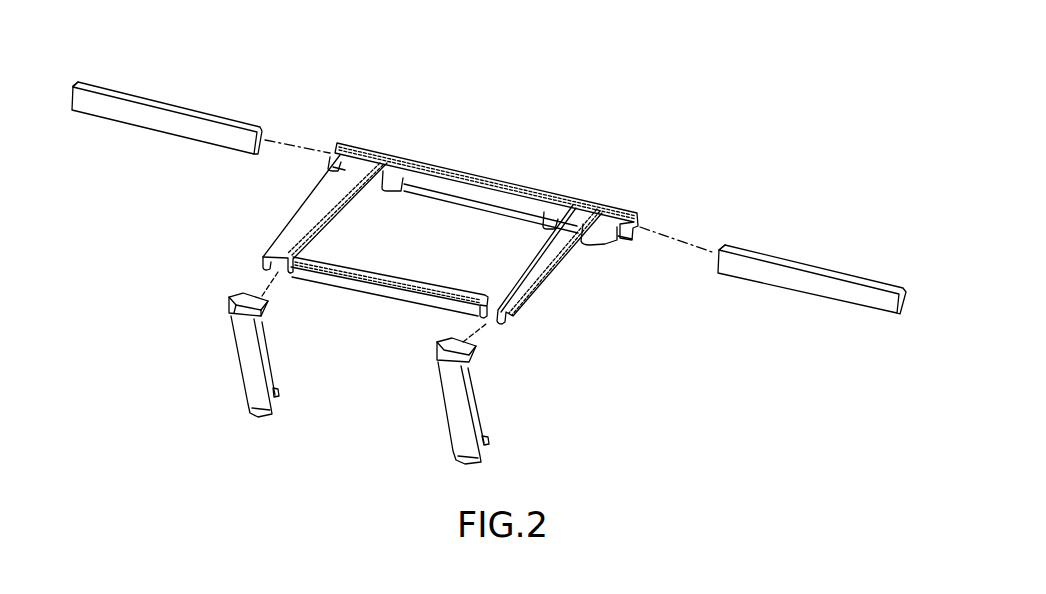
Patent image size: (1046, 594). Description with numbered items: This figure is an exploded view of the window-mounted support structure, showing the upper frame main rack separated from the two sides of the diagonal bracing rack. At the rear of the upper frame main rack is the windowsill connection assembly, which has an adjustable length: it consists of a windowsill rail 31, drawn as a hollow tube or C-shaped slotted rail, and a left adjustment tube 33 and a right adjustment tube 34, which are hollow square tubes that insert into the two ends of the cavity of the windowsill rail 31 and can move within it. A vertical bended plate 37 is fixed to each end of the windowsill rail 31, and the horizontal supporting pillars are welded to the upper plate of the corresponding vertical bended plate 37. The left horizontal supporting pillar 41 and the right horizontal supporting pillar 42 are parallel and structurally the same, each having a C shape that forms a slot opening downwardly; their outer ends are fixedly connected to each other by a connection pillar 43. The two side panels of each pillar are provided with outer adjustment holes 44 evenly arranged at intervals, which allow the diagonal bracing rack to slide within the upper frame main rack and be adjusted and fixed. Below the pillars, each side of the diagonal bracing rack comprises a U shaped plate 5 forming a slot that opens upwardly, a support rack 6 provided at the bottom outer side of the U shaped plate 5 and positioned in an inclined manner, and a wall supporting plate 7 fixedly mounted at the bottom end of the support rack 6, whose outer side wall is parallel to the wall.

The windowsill rail 31 is at (458, 177).
The left adjustment tube 33 is at (174, 108).
The right adjustment tube 34 is at (788, 258).
The vertical bended plate 37 is at (603, 235).
The left horizontal supporting pillar 41 is at (303, 226).
The right horizontal supporting pillar 42 is at (578, 270).
The connection pillar 43 is at (382, 278).
The outer adjustment holes 44 is at (522, 302).
The U shaped plate 5 is at (258, 313).
The support rack 6 is at (261, 350).
The wall supporting plate 7 is at (273, 389).